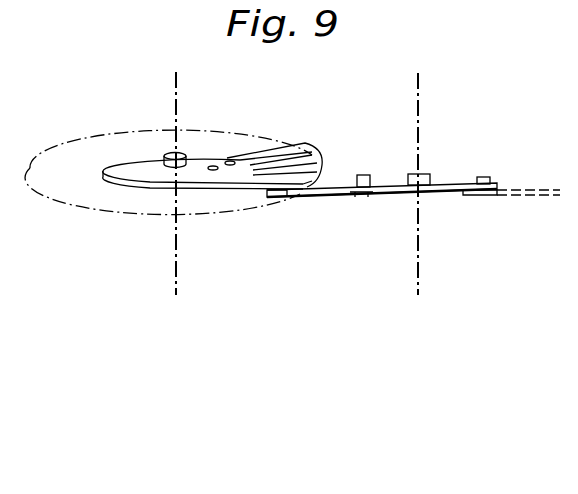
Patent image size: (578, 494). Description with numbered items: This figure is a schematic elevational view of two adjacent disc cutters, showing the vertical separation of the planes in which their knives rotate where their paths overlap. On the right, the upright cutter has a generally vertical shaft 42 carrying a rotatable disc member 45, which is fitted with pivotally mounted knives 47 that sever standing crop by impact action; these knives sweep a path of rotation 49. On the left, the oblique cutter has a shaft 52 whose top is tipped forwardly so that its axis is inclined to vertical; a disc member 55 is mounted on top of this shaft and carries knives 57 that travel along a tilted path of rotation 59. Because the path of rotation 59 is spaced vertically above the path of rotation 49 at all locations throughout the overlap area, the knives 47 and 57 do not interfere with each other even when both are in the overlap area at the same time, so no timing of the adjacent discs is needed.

The shaft 42 is at (425, 174).
The disc member 45 is at (497, 183).
The knives 47 is at (327, 198).
The path of rotation 49 is at (268, 195).
The shaft 52 is at (170, 152).
The disc member 55 is at (103, 172).
The knives 57 is at (315, 183).
The path of rotation 59 is at (97, 206).